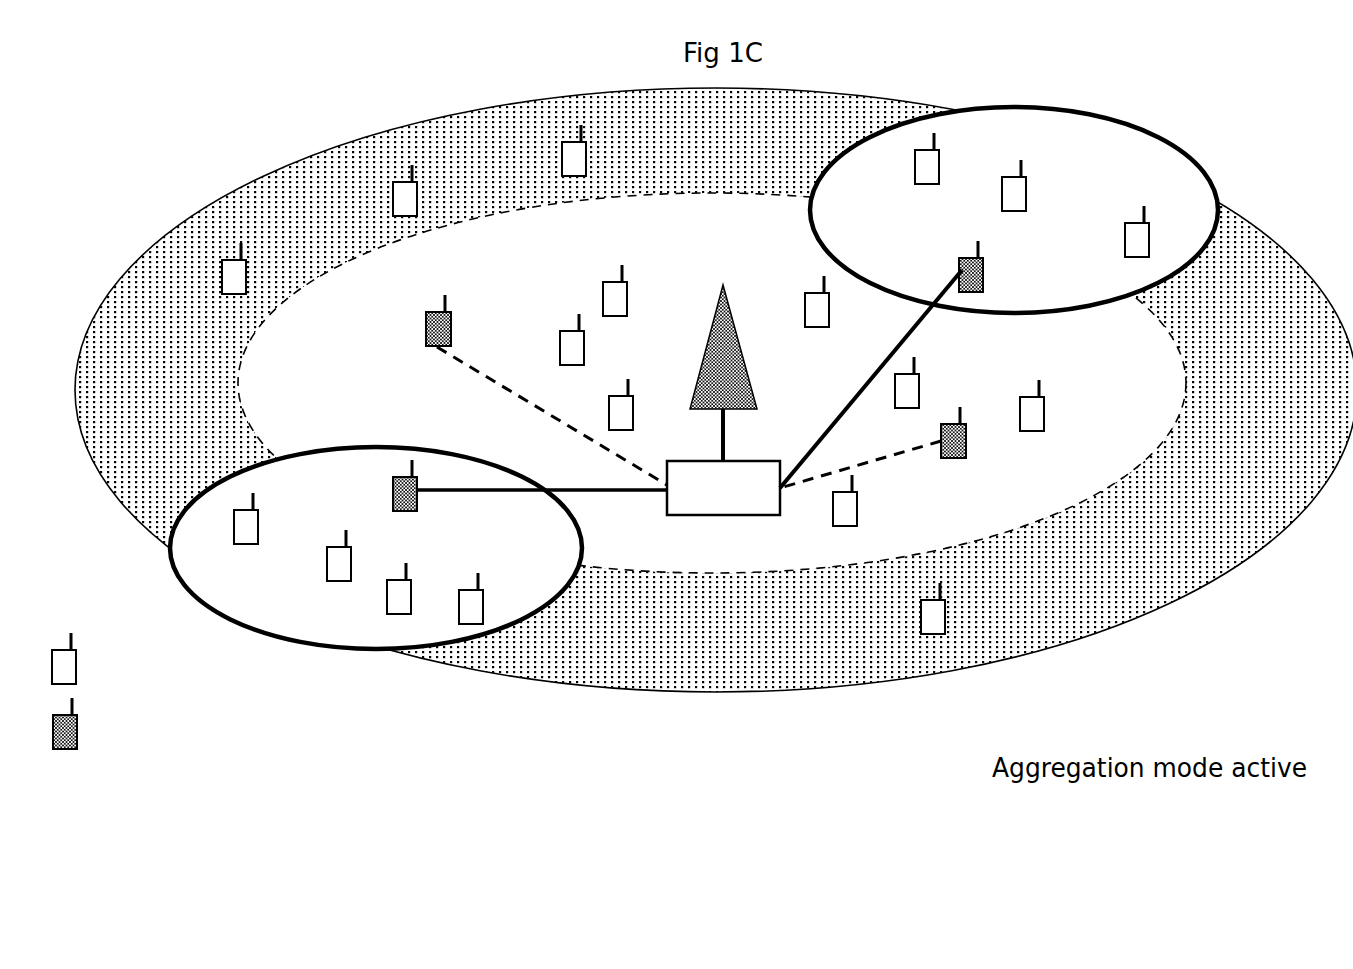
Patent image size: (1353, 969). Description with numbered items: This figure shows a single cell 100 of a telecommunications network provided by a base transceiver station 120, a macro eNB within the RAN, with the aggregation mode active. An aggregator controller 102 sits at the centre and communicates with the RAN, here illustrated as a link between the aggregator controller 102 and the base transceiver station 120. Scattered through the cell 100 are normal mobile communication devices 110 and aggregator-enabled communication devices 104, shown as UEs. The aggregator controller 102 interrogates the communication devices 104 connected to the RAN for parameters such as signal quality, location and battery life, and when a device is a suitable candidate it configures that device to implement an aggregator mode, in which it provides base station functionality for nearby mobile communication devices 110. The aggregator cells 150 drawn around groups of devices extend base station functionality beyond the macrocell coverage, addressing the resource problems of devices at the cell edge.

The cell 100 is at (714, 390).
The base transceiver station 120 is at (770, 383).
The aggregation group 150 is at (694, 378).
The aggregator controller 102 is at (723, 400).
The mobile communication device 110 is at (600, 404).
The communication device 104 is at (518, 495).